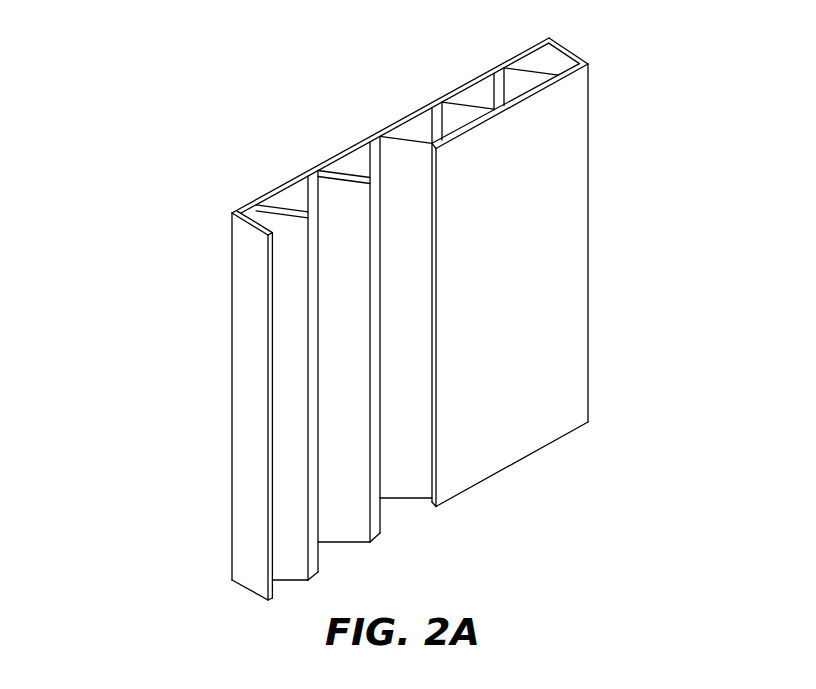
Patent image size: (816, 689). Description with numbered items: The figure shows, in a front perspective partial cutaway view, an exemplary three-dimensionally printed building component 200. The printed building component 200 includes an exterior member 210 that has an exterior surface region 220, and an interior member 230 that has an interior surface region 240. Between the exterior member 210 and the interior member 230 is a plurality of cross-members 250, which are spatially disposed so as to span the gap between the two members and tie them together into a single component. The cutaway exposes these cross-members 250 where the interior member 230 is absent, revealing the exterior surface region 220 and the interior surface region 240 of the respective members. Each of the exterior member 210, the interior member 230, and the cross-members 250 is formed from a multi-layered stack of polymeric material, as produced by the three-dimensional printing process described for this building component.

The printed building component 200 is at (153, 70).
The exterior member 210 is at (238, 213).
The exterior surface region 220 is at (391, 109).
The interior member 230 is at (578, 183).
The interior surface region 240 is at (566, 312).
The cross-members 250 is at (297, 370).